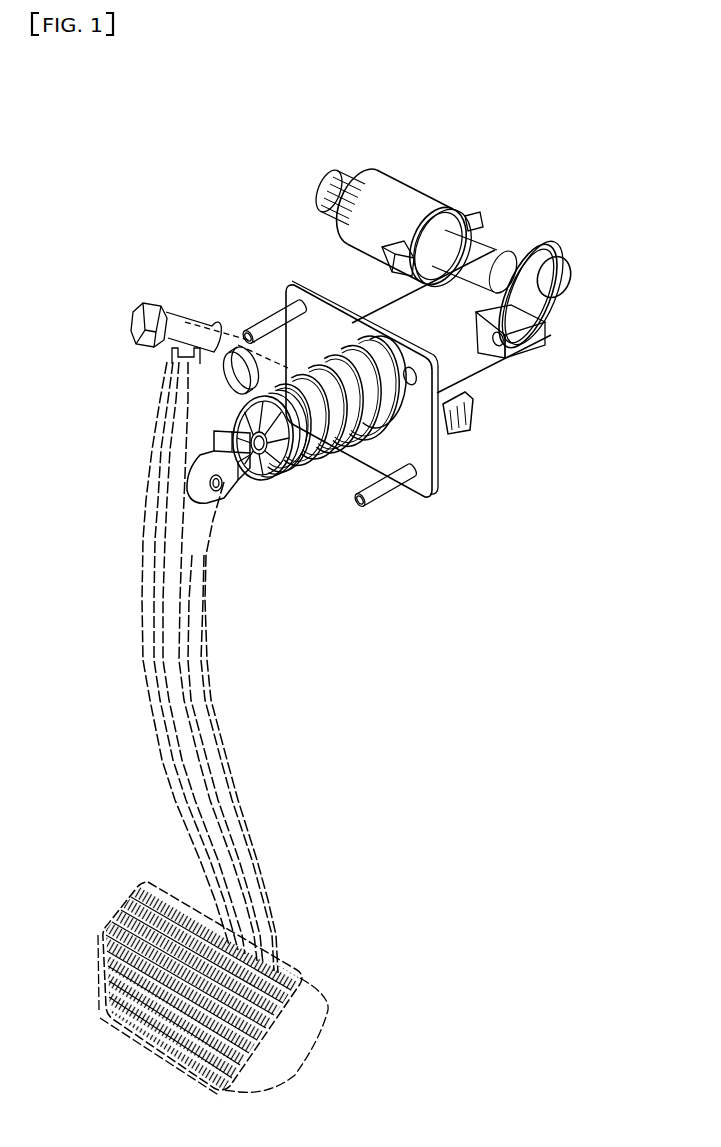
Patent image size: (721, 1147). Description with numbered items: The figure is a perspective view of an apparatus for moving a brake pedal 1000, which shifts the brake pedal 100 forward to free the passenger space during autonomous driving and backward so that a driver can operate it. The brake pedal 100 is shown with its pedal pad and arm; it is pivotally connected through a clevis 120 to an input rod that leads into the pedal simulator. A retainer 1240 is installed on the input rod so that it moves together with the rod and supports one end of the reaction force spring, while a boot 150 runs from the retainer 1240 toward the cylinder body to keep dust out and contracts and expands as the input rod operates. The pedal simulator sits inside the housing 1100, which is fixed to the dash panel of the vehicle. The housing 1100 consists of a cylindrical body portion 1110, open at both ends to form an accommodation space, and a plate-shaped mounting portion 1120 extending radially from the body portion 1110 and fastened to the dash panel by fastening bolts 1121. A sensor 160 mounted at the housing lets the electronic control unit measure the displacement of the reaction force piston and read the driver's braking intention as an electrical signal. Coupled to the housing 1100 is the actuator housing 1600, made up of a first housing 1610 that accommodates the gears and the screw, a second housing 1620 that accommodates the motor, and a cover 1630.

The apparatus for moving a brake pedal 1000 is at (364, 108).
The brake pedal 100 is at (230, 758).
The clevis 120 is at (233, 487).
The retainer 1240 is at (270, 480).
The boot 150 is at (310, 477).
The sensor 160 is at (460, 420).
The housing 1100 is at (318, 234).
The body portion 1110 is at (386, 312).
The mounting portion 1120 is at (300, 282).
The fastening bolts 1121 is at (383, 487).
The actuator housing 1600 is at (610, 134).
The first housing 1610 is at (517, 262).
The second housing 1620 is at (405, 194).
The cover 1630 is at (557, 270).